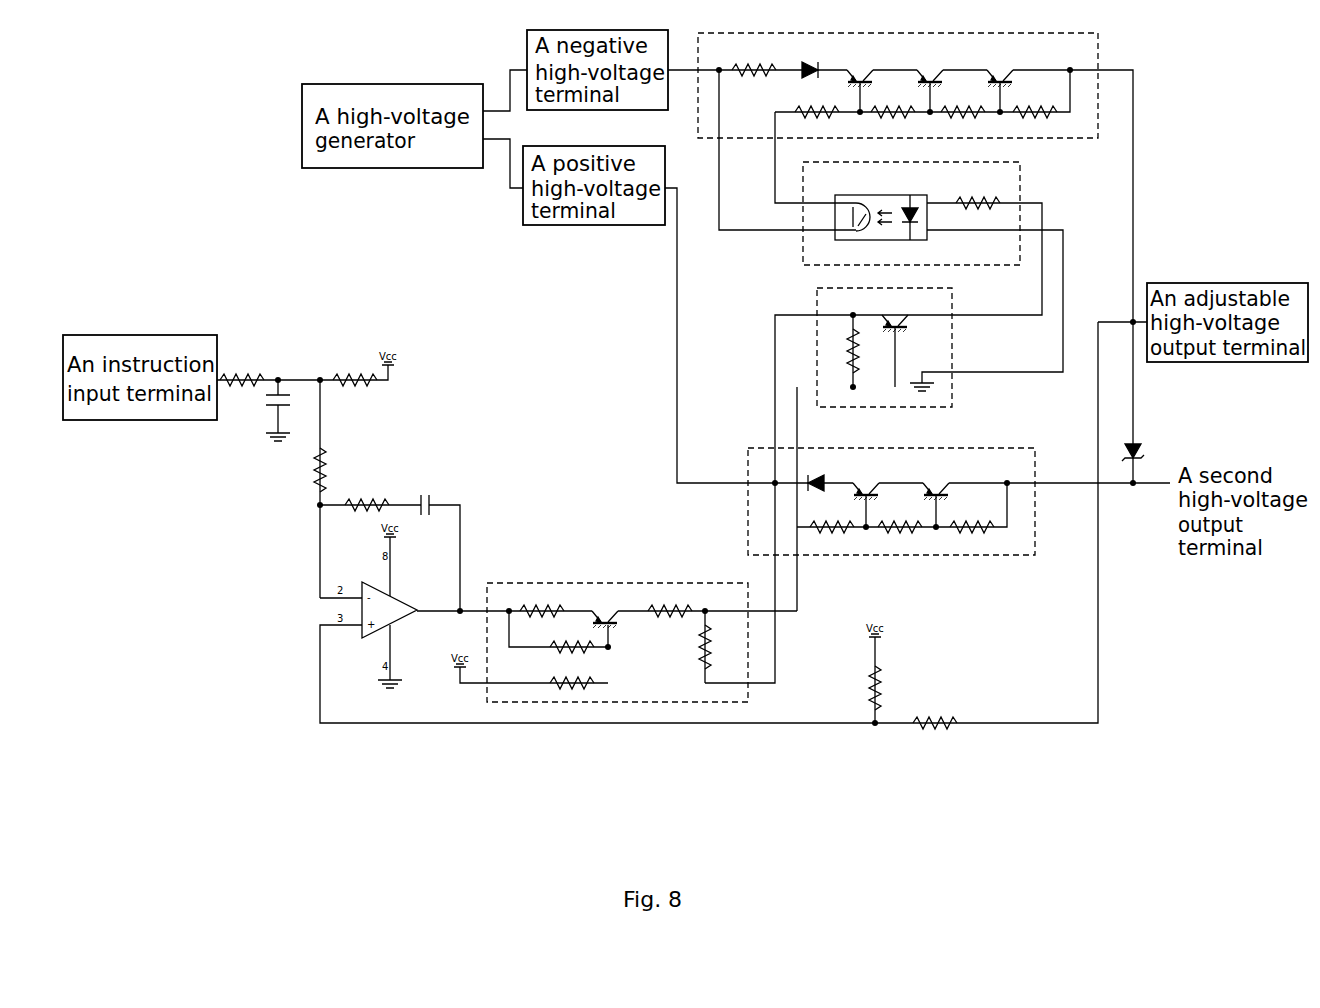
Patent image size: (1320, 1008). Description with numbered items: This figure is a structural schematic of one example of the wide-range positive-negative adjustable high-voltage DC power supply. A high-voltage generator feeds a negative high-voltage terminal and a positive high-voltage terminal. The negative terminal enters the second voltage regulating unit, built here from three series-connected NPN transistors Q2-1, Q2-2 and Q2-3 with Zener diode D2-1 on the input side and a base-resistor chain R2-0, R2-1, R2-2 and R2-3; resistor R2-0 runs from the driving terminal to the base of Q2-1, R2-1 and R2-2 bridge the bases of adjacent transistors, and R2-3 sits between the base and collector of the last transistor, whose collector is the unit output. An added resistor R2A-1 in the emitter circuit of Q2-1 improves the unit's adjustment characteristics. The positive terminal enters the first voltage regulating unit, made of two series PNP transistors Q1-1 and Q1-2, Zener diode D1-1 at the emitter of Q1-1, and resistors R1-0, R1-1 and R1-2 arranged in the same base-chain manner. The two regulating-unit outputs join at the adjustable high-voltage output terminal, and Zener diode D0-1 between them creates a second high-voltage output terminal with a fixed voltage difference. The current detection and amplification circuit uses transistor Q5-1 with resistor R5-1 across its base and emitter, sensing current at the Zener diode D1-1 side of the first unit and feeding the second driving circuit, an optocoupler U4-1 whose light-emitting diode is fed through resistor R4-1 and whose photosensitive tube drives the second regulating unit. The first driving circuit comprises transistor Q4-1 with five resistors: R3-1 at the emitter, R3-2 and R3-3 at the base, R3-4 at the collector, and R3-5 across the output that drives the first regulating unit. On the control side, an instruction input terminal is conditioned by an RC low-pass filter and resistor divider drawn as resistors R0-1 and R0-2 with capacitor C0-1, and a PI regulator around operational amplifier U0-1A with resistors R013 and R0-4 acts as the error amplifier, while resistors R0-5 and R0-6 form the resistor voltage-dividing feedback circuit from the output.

The resistor R2A-1 is at (754, 64).
The Zener diode D2-1 is at (812, 59).
The NPN transistor Q2-1 is at (859, 82).
The NPN transistor Q2-2 is at (929, 82).
The NPN transistor Q2-3 is at (999, 82).
The resistor R2-0 is at (817, 106).
The resistor R2-1 is at (893, 106).
The resistor R2-2 is at (963, 106).
The resistor R2-3 is at (1035, 106).
The optocoupler U4-1 is at (880, 211).
The resistor R4-1 is at (978, 195).
The transistor Q5-1 is at (894, 339).
The resistor R5-1 is at (865, 351).
The Zener diode D1-1 is at (818, 472).
The PNP transistor Q1-1 is at (865, 495).
The PNP transistor Q1-2 is at (935, 495).
The resistor R1-0 is at (832, 520).
The resistor R1-1 is at (900, 520).
The resistor R1-2 is at (972, 520).
The Zener diode D0-1 is at (1149, 452).
The resistor R0-1 is at (242, 374).
The resistor R0-2 is at (355, 373).
The capacitor C0-1 is at (353, 447).
The resistor R013 is at (334, 470).
The resistor R0-4 is at (367, 499).
The operational amplifier U0-1A is at (399, 610).
The resistor R3-1 is at (542, 604).
The transistor Q4-1 is at (605, 608).
The resistor R3-4 is at (670, 604).
The resistor R3-2 is at (572, 640).
The resistor R3-3 is at (572, 676).
The resistor R3-5 is at (717, 647).
The resistor R0-5 is at (887, 687).
The resistor R0-6 is at (935, 716).